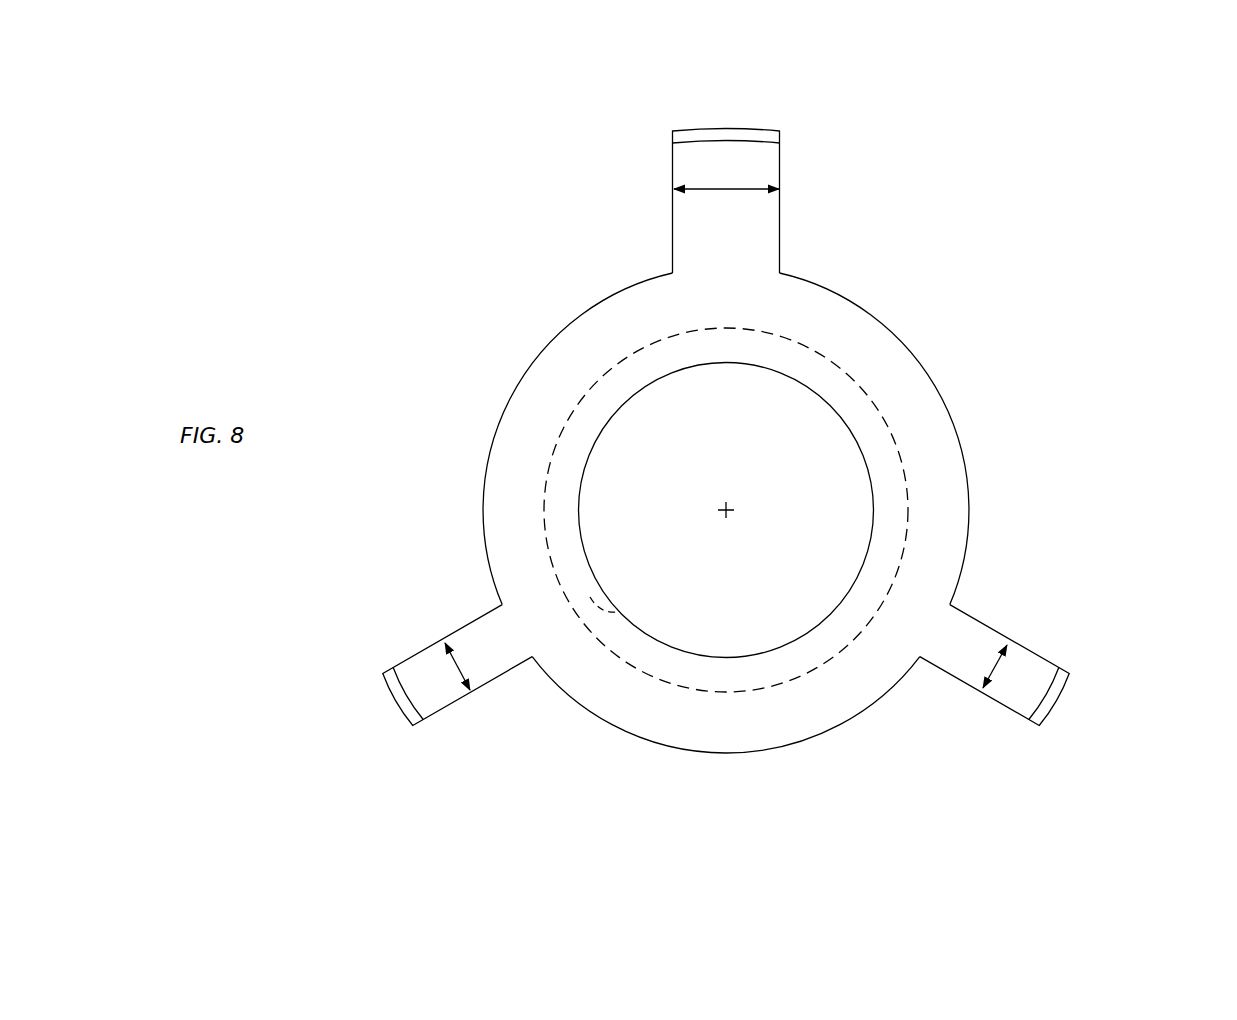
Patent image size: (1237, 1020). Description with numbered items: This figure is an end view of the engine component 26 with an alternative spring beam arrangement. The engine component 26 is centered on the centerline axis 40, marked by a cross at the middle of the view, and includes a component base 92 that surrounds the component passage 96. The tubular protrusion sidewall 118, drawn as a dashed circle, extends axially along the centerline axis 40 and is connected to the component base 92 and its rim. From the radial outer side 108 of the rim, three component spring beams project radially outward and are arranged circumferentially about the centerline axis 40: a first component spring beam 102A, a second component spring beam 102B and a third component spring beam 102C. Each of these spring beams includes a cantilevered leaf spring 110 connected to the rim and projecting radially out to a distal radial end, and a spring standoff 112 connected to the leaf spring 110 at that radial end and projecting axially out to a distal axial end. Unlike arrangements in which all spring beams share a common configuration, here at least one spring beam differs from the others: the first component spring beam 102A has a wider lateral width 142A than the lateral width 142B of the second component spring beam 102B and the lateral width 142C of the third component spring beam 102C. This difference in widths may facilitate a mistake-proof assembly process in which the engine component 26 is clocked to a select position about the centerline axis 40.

The engine component 26 is at (1046, 174).
The component base 92 is at (949, 372).
The component passage 96 is at (735, 467).
The centerline axis 40 is at (730, 515).
The radial outer side 108 is at (970, 488).
The cantilevered leaf spring 110 is at (753, 232).
The spring standoff 112 is at (684, 137).
The tubular protrusion sidewall 118 is at (617, 607).
The first component spring beam 102A is at (788, 118).
The second component spring beam 102B is at (388, 707).
The third component spring beam 102C is at (1092, 695).
The lateral width 142A is at (727, 188).
The lateral width 142B is at (457, 667).
The lateral width 142C is at (998, 668).